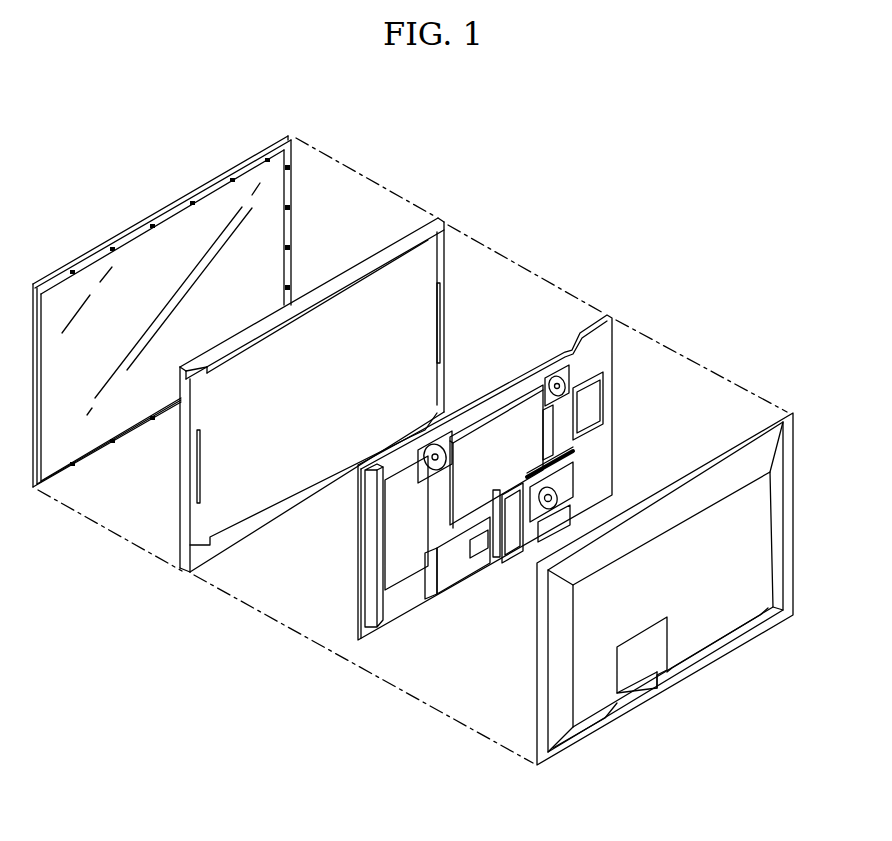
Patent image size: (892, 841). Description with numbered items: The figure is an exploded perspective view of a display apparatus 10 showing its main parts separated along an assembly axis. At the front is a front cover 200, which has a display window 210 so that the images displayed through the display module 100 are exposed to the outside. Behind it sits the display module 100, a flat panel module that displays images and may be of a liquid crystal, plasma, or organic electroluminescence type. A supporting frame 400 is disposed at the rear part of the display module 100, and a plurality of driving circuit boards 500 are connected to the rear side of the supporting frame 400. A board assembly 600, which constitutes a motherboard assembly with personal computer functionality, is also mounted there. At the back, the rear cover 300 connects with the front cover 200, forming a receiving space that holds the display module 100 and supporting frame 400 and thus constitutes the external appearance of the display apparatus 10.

The display apparatus 10 is at (598, 192).
The display module 100 is at (441, 223).
The front cover 200 is at (291, 141).
The display window 210 is at (163, 250).
The rear cover 300 is at (793, 415).
The supporting frame 400 is at (605, 338).
The driving circuit boards 500 is at (513, 427).
The board assembly 600 is at (570, 485).